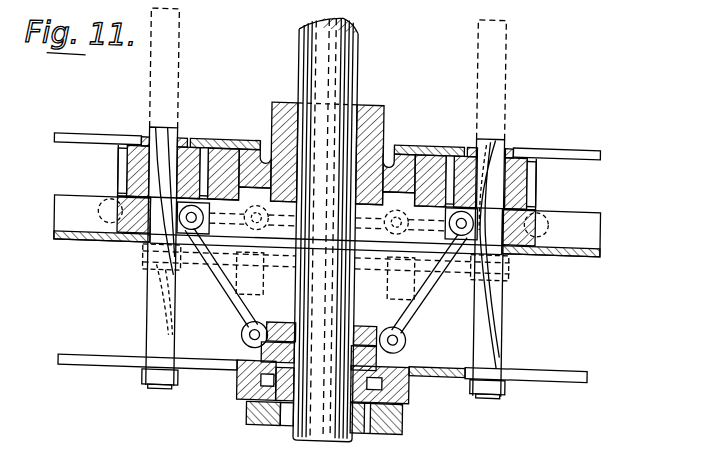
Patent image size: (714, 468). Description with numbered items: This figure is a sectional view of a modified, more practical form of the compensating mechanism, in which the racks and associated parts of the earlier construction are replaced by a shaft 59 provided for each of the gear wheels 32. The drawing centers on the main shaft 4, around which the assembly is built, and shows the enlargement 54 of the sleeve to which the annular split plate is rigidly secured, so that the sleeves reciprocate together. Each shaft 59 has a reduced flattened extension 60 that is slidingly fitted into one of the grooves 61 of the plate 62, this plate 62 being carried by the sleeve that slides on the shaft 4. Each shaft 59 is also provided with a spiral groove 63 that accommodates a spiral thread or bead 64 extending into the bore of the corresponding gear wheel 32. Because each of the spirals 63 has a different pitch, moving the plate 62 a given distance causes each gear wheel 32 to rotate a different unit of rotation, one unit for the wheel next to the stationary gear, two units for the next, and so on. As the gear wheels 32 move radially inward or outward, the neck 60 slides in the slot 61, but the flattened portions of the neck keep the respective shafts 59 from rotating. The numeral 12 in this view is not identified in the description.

The shaft 4 is at (312, 444).
The frame 12 is at (240, 397).
The gear wheel 32 is at (107, 167).
The enlargement 54 is at (251, 428).
The shaft 59 is at (148, 304).
The reduced flattened extension 60 is at (142, 381).
The groove 61 is at (94, 373).
The plate 62 is at (427, 364).
The spiral groove 63 is at (147, 251).
The spiral thread or bead 64 is at (124, 194).